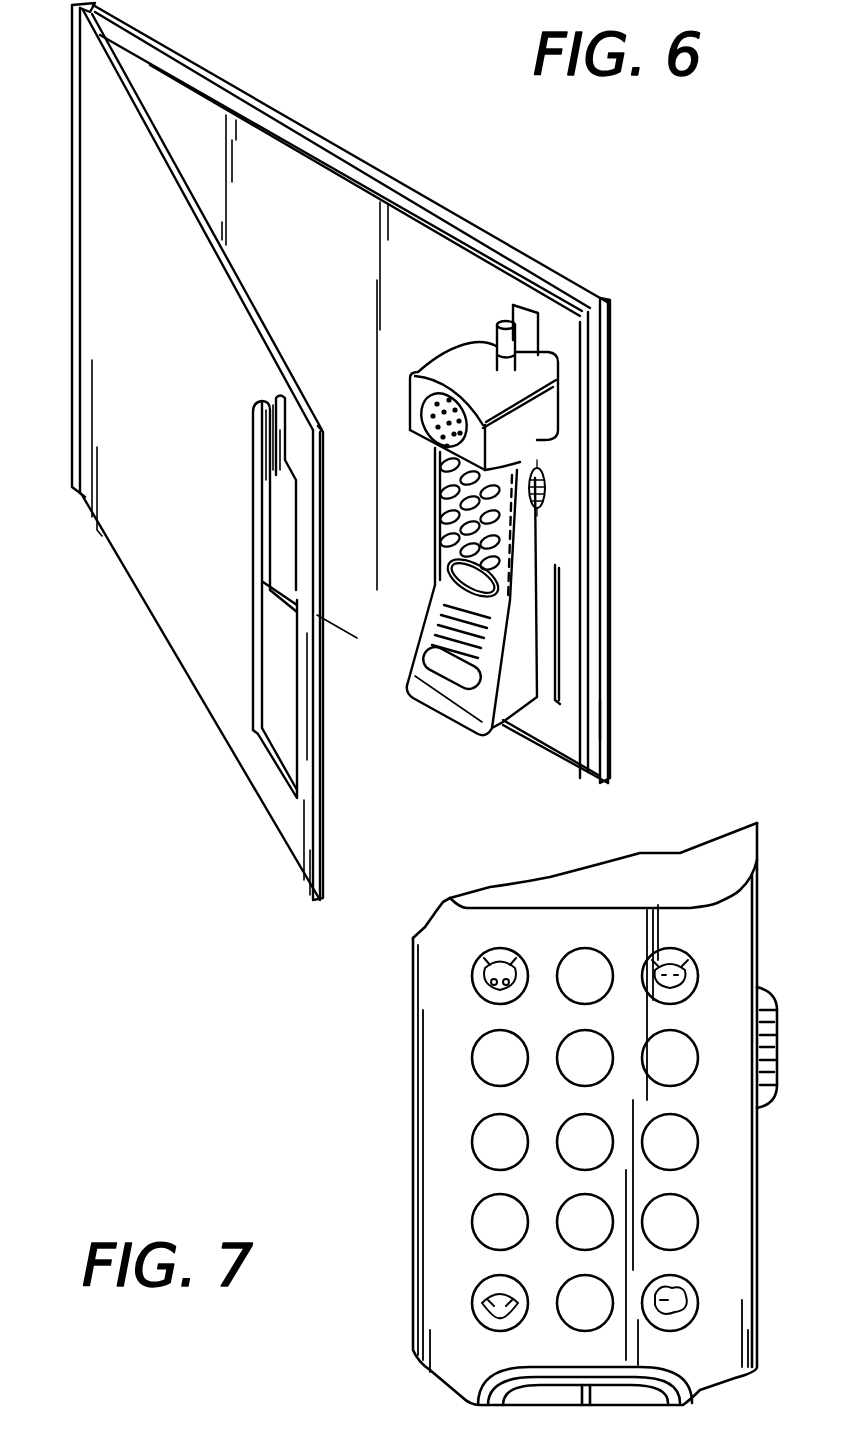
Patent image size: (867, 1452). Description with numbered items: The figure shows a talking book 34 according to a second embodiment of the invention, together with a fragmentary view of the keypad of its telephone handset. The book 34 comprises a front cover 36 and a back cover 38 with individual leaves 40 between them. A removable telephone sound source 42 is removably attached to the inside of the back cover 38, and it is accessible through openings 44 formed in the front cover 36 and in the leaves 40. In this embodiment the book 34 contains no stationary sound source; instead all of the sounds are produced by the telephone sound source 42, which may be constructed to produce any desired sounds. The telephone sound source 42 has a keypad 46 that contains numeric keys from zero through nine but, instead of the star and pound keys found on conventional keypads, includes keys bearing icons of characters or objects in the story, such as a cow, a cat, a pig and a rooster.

In FIG. 6, the book 34 is at (486, 206).
In FIG. 6, the front cover 36 is at (291, 821).
In FIG. 6, the back cover 38 is at (603, 715).
In FIG. 6, the individual leaves 40 is at (560, 732).
In FIG. 6, the telephone sound source 42 is at (503, 713).
In FIG. 7, the telephone sound source 42 is at (400, 1027).
In FIG. 6, the openings 44 is at (532, 329).
In FIG. 6, the keypad 46 is at (440, 510).
In FIG. 7, the keypad 46 is at (440, 1165).